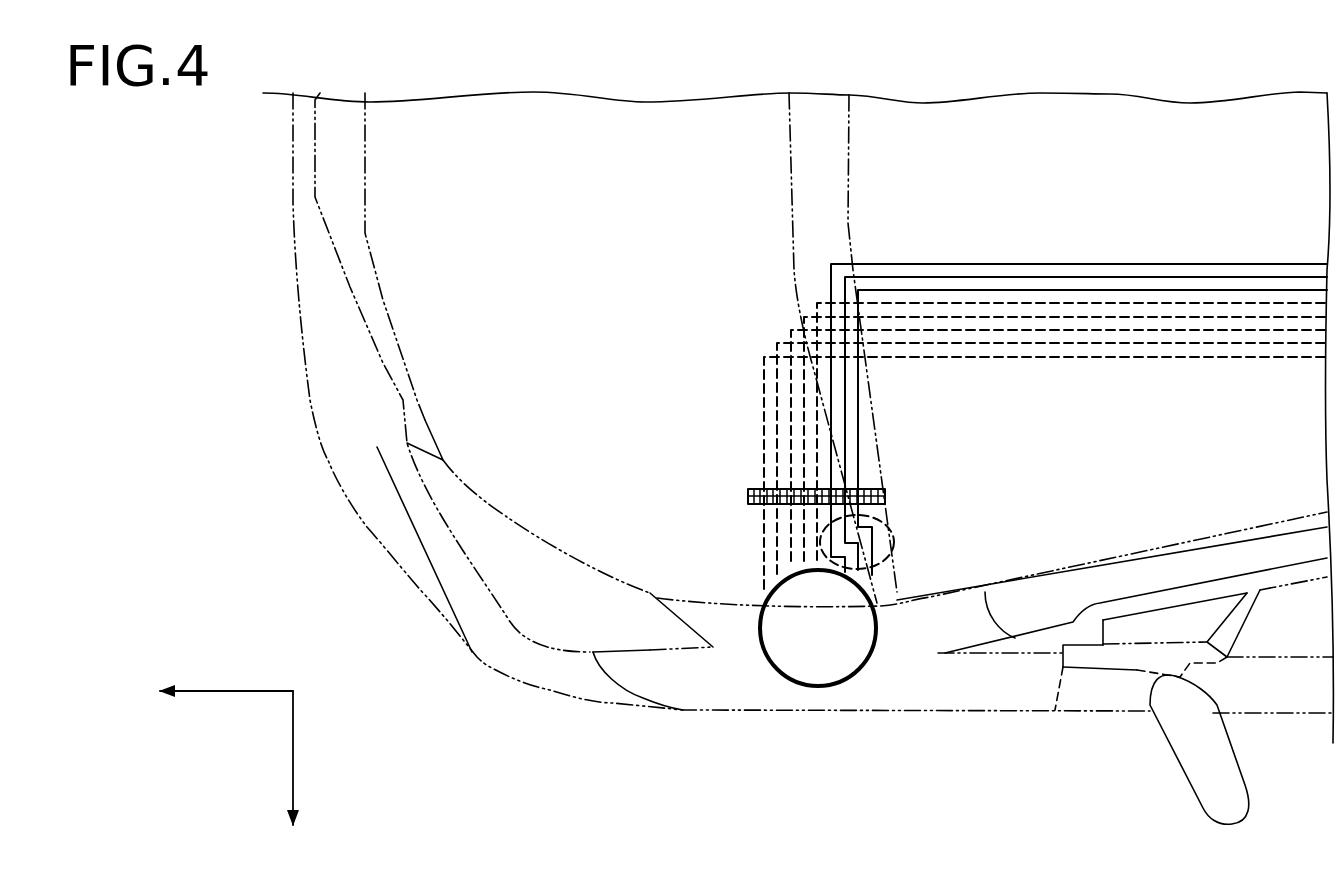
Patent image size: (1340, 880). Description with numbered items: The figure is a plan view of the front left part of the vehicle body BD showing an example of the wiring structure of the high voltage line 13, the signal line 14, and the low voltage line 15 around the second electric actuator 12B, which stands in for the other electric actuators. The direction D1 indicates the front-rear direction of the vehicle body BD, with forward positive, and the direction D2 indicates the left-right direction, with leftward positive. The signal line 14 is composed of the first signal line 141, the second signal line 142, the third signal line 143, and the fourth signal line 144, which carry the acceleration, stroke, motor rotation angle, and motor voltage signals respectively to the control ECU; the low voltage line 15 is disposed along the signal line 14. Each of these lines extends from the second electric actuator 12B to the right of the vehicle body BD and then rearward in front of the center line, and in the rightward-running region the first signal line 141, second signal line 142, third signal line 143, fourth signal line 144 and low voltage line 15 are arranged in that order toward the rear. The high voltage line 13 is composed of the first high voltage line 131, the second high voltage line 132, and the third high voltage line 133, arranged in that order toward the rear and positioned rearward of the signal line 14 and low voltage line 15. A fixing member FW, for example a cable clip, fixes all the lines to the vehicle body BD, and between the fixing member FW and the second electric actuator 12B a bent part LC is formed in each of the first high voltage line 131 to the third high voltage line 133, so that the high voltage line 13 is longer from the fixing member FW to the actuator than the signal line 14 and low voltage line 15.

The second electric actuator 12B is at (818, 686).
The high voltage line 13 is at (1079, 419).
The first high voltage line 131 is at (833, 410).
The second high voltage line 132 is at (845, 438).
The third high voltage line 133 is at (858, 468).
The signal line 14 is at (982, 455).
The first signal line 141 is at (763, 360).
The second signal line 142 is at (777, 392).
The third signal line 143 is at (790, 422).
The fourth signal line 144 is at (803, 450).
The low voltage line 15 is at (817, 480).
The vehicle body BD is at (328, 458).
The fixing member FW is at (747, 495).
The bent part LC is at (890, 525).
The direction D1 is at (205, 692).
The direction D2 is at (294, 777).